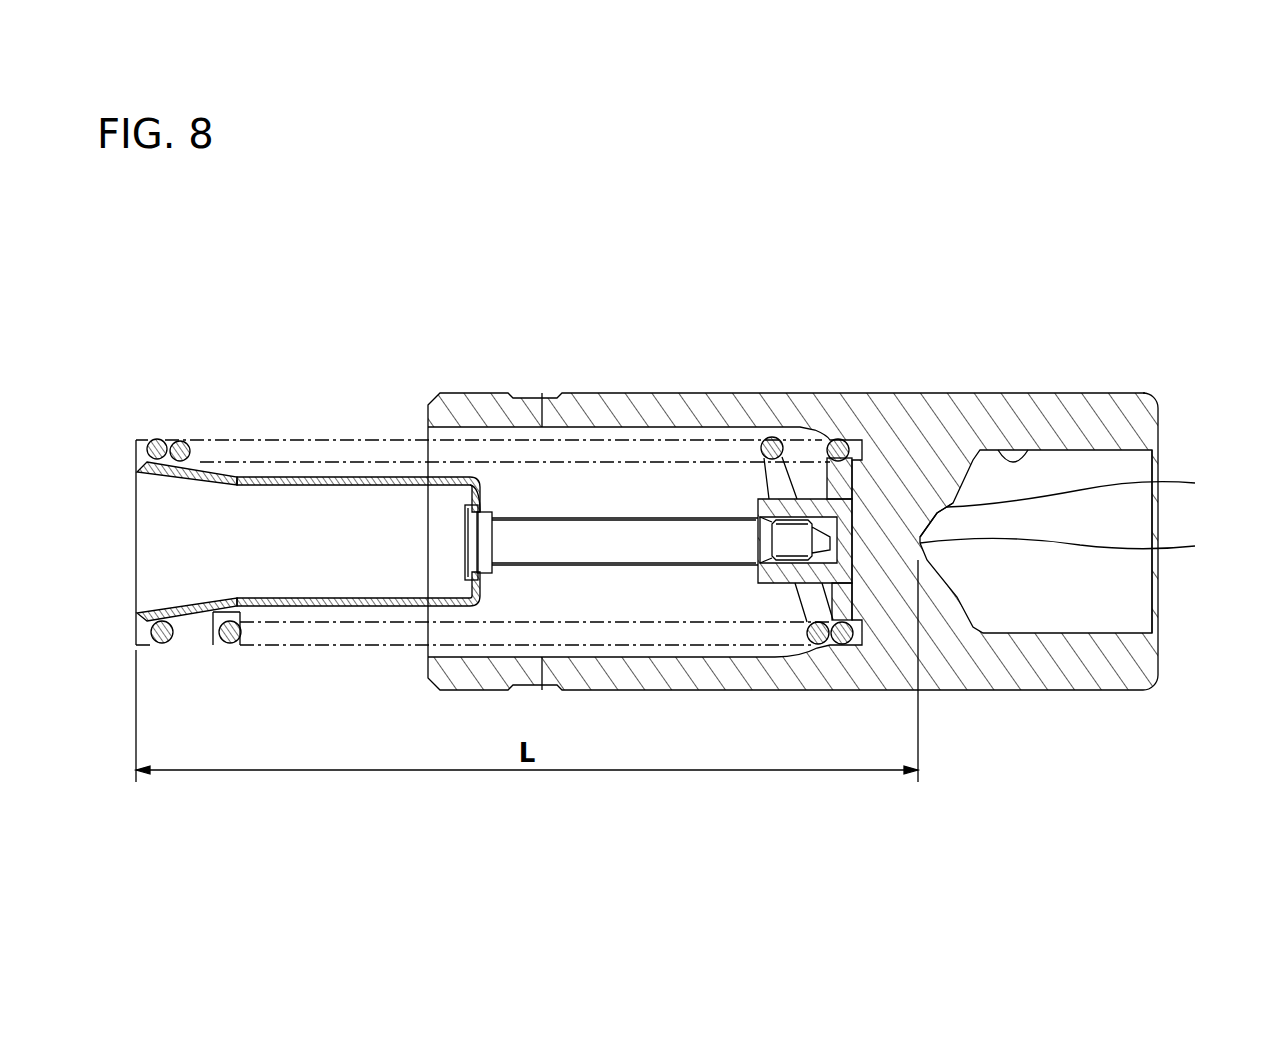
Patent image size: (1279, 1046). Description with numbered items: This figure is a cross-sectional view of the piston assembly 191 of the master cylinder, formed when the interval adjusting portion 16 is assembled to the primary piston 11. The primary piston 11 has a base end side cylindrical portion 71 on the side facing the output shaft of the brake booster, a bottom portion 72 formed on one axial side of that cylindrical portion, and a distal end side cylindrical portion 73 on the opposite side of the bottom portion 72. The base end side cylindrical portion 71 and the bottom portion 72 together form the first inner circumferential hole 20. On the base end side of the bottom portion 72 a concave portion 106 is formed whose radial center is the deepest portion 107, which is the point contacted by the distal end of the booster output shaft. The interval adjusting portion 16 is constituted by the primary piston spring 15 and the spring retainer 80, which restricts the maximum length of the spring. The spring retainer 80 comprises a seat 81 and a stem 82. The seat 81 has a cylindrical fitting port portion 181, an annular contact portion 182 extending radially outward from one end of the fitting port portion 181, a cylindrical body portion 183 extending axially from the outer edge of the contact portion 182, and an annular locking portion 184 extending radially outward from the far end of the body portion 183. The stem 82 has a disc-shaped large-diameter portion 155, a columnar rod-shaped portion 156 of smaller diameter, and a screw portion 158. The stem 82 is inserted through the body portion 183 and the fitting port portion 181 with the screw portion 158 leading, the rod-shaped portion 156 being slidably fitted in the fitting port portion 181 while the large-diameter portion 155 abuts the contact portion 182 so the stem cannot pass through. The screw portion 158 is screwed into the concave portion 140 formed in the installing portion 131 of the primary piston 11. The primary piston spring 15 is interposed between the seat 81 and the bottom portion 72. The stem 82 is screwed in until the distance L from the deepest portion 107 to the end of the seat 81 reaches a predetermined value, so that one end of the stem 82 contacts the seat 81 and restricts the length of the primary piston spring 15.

The primary piston 11 is at (1123, 394).
The primary piston spring 15 is at (181, 441).
The interval adjusting portion 16 is at (302, 440).
The first inner circumferential hole 20 is at (1004, 455).
The base end side cylindrical portion 71 is at (1052, 420).
The bottom portion 72 is at (897, 538).
The distal end side cylindrical portion 73 is at (655, 405).
The spring retainer 80 is at (377, 477).
The seat 81 is at (278, 472).
The stem 82 is at (707, 527).
The concave portion 106 is at (1097, 487).
The deepest portion 107 is at (1084, 543).
The installing portion 131 is at (805, 500).
The concave portion 140 is at (836, 537).
The large-diameter portion 155 is at (470, 574).
The rod-shaped portion 156 is at (600, 530).
The screw portion 158 is at (768, 437).
The fitting port portion 181 is at (492, 506).
The contact portion 182 is at (466, 500).
The body portion 183 is at (342, 478).
The locking portion 184 is at (140, 440).
The piston assembly 191 is at (805, 312).